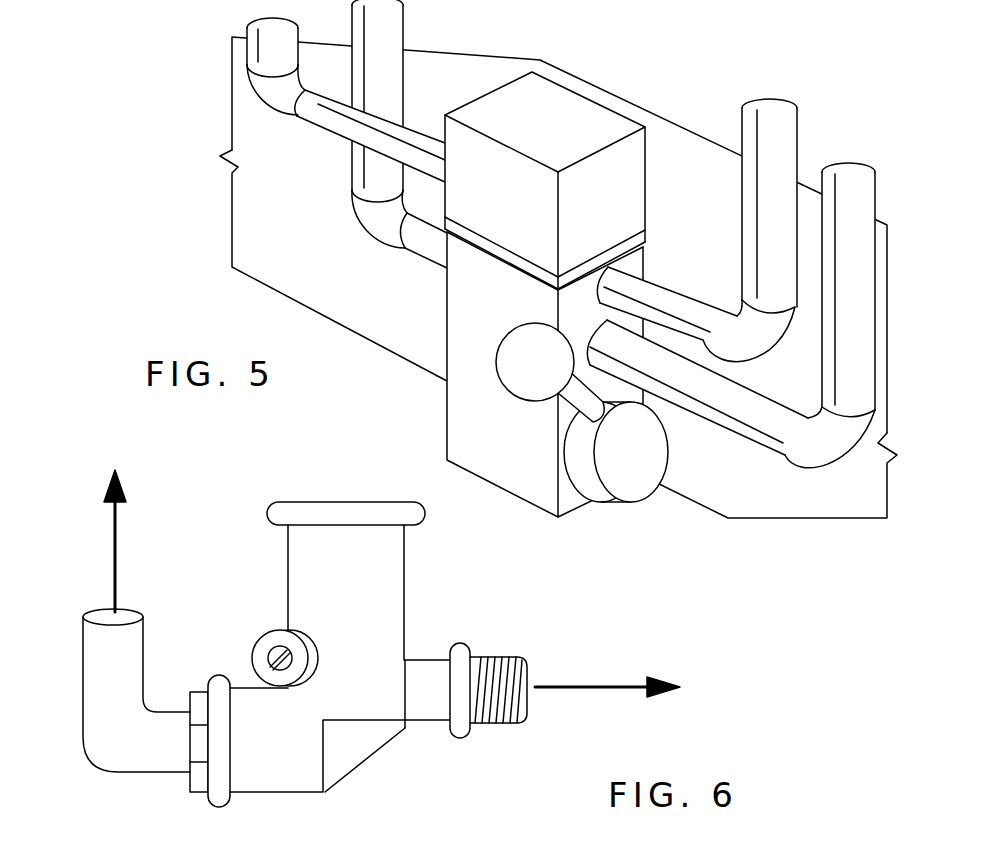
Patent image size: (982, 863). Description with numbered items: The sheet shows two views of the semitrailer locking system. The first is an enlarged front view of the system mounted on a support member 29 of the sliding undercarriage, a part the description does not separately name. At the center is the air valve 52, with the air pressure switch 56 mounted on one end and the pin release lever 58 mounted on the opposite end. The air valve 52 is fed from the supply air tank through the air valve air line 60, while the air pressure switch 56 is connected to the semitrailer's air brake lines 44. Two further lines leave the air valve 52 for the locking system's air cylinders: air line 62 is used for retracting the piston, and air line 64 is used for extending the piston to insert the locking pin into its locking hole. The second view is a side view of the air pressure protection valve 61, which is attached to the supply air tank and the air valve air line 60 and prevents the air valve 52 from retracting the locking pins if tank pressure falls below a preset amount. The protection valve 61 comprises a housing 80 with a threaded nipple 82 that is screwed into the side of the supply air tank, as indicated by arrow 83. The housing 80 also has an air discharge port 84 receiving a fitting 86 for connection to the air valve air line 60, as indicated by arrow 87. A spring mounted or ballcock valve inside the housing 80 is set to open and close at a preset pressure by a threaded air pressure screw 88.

In FIG. 5, the mounting panel 29 is at (255, 282).
In FIG. 5, the air brake lines 44 is at (288, 100).
In FIG. 5, the air valve 52 is at (443, 312).
In FIG. 5, the air pressure switch 56 is at (600, 101).
In FIG. 5, the pin release lever 58 is at (668, 448).
In FIG. 5, the air valve air line 60 is at (390, 218).
In FIG. 5, the air line 62 is at (807, 452).
In FIG. 5, the air line 64 is at (690, 313).
In FIG. 6, the air pressure protection valve 61 is at (380, 568).
In FIG. 6, the housing 80 is at (367, 683).
In FIG. 6, the threaded nipple 82 is at (500, 660).
In FIG. 6, the arrow 83 is at (592, 690).
In FIG. 6, the air discharge port 84 is at (218, 765).
In FIG. 6, the fitting 86 is at (110, 705).
In FIG. 6, the arrow 87 is at (113, 567).
In FIG. 6, the threaded air pressure screw 88 is at (280, 650).